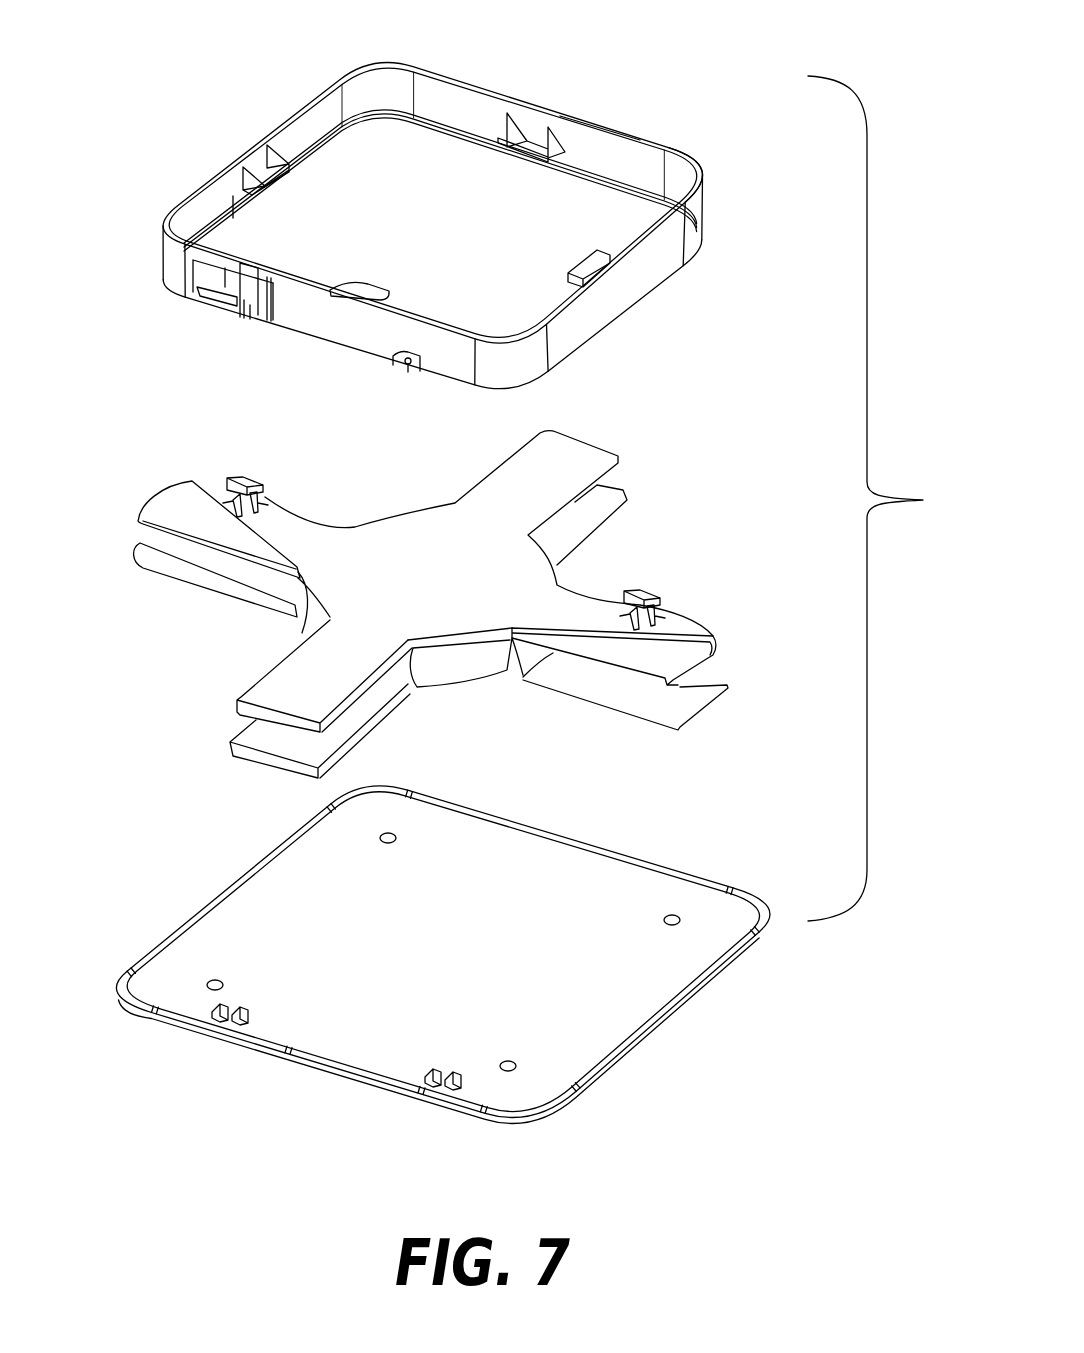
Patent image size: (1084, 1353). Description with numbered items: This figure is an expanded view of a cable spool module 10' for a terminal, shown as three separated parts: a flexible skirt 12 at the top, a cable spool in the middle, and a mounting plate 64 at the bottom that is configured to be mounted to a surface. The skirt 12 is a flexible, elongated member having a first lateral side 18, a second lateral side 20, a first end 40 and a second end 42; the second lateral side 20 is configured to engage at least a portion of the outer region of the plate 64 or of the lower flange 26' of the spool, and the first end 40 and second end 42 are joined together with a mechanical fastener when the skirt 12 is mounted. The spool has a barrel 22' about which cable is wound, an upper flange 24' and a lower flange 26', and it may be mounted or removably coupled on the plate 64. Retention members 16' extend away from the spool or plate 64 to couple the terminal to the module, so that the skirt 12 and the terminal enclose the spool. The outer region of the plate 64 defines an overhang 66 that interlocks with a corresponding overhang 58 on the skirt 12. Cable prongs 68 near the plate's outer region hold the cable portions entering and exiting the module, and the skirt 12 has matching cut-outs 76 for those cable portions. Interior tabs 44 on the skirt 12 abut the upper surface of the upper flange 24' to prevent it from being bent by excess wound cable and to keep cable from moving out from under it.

The cable spool module 10' is at (881, 498).
The flexible skirt 12 is at (165, 262).
The first lateral side 18 is at (632, 135).
The second lateral side 20 is at (682, 258).
The first end 40 is at (283, 320).
The second end 42 is at (212, 317).
The interior tabs 44 is at (263, 177).
The overhang 58 is at (318, 135).
The cut-outs 76 is at (240, 320).
The retention member 16' is at (437, 553).
The barrel 22' is at (489, 604).
The upper flange 24' is at (403, 633).
The lower flange 26' is at (431, 704).
The mounting plate 64 is at (762, 974).
The overhang 66 is at (640, 858).
The cable prongs 68 is at (196, 1004).